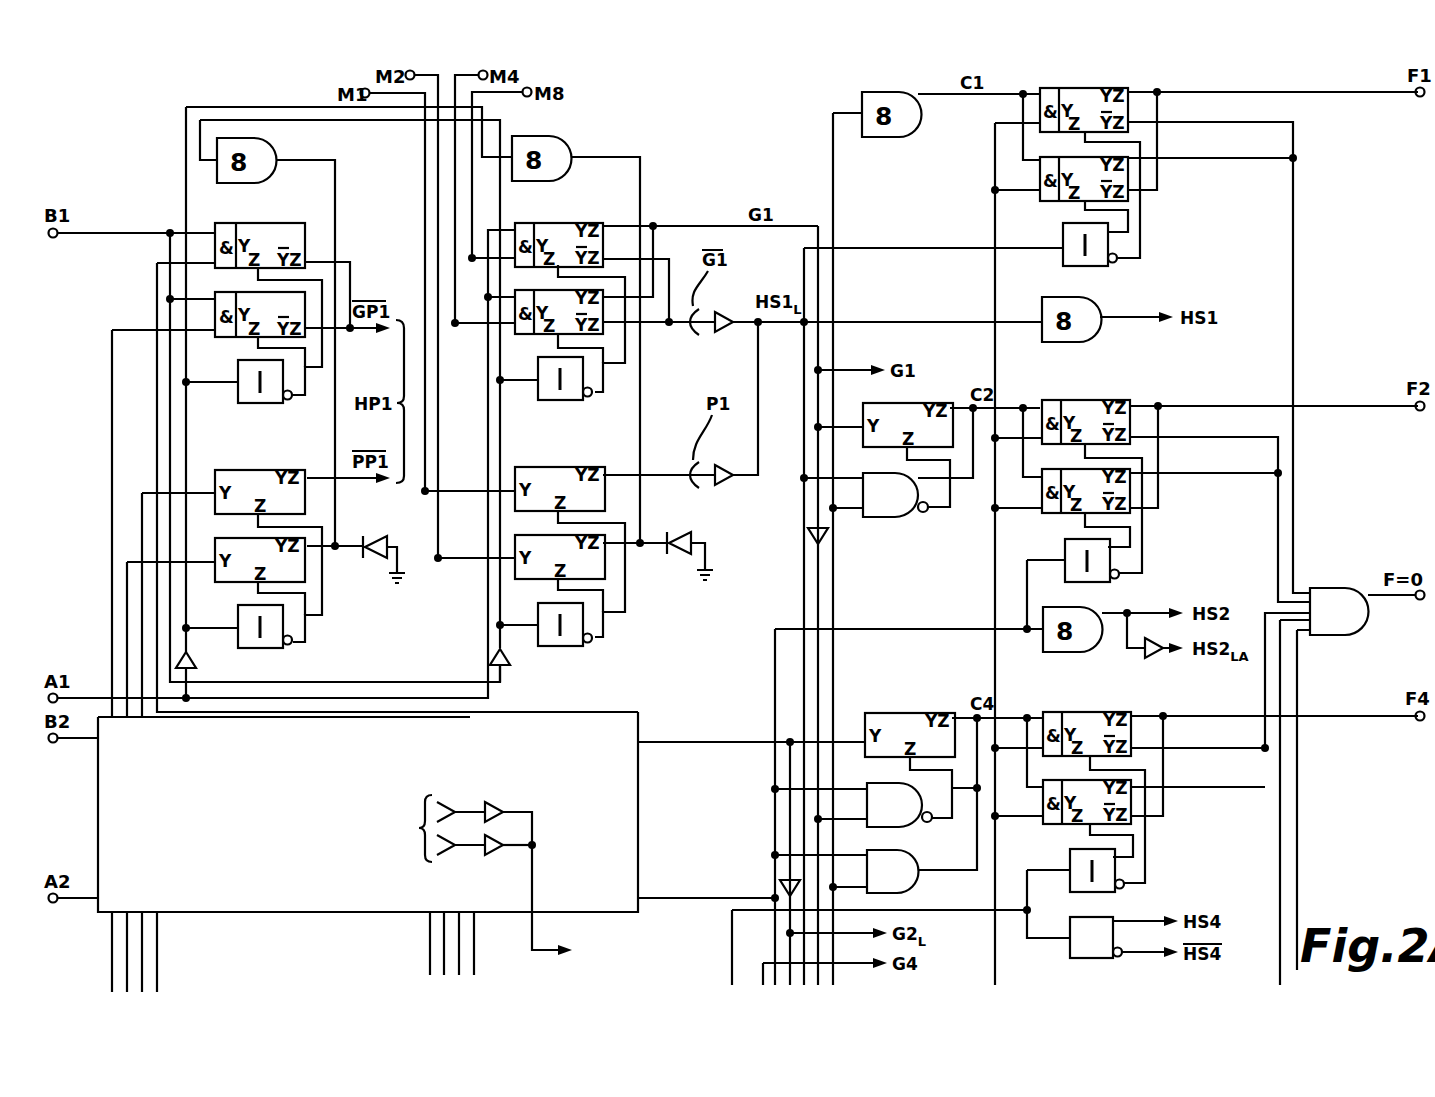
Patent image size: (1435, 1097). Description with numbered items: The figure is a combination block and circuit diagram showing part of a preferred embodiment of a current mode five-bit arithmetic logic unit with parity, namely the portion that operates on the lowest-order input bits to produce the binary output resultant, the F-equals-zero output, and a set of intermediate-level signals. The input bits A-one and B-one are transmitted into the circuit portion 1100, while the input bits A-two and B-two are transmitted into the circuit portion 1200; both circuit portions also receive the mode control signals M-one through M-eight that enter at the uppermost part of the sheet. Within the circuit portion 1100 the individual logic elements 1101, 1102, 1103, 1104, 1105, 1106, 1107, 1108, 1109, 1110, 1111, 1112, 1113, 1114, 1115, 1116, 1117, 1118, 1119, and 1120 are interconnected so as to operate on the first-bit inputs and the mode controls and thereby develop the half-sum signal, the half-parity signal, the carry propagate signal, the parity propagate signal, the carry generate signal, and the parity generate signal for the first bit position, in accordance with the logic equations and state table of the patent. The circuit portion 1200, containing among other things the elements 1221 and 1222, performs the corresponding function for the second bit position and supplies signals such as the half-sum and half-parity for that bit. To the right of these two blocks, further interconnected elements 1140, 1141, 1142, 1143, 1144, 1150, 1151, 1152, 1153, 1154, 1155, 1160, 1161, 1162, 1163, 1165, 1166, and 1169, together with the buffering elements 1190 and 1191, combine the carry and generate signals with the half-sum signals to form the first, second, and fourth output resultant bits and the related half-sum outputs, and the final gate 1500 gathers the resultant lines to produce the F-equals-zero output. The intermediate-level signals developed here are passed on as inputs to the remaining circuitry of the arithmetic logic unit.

The circuit portion 1100 is at (148, 187).
The gated latch cell 1101 is at (246, 223).
The gated latch cell 1102 is at (246, 292).
The inverter 1103 is at (246, 360).
The latch cell 1104 is at (246, 470).
The latch cell 1105 is at (246, 538).
The inverter 1106 is at (246, 605).
The buffer 1107 is at (197, 660).
The AND gate 1108 is at (267, 139).
The AND gate 1109 is at (560, 136).
The gated latch cell 1110 is at (562, 223).
The gated latch cell 1111 is at (560, 290).
The inverter 1112 is at (560, 357).
The latch cell 1113 is at (560, 467).
The latch cell 1114 is at (560, 535).
The inverter 1115 is at (560, 603).
The diode 1116 is at (680, 553).
The buffer 1117 is at (725, 465).
The buffer 1118 is at (728, 314).
The diode 1119 is at (374, 556).
The buffer 1120 is at (510, 657).
The AND gate 1140 is at (885, 92).
The gated latch cell 1141 is at (1080, 88).
The gated latch cell 1142 is at (1080, 157).
The inverter 1143 is at (1080, 223).
The AND gate 1144 is at (1078, 297).
The latch cell 1150 is at (896, 403).
The gated latch cell 1151 is at (1080, 400).
The gated latch cell 1152 is at (1080, 469).
The inverter 1153 is at (1075, 539).
The AND gate 1154 is at (1080, 607).
The NAND gate 1155 is at (892, 473).
The latch cell 1160 is at (906, 713).
The gated latch cell 1161 is at (1080, 712).
The gated latch cell 1162 is at (1080, 780).
The inverter 1163 is at (1075, 849).
The NAND gate 1165 is at (900, 783).
The AND gate 1166 is at (896, 850).
The divide-by-two element 1169 is at (1065, 955).
The buffer 1190 is at (828, 537).
The buffer 1191 is at (780, 875).
The circuit portion 1200 is at (368, 833).
The buffer 1221 is at (496, 803).
The buffer 1222 is at (495, 857).
The AND gate 1500 is at (1350, 588).